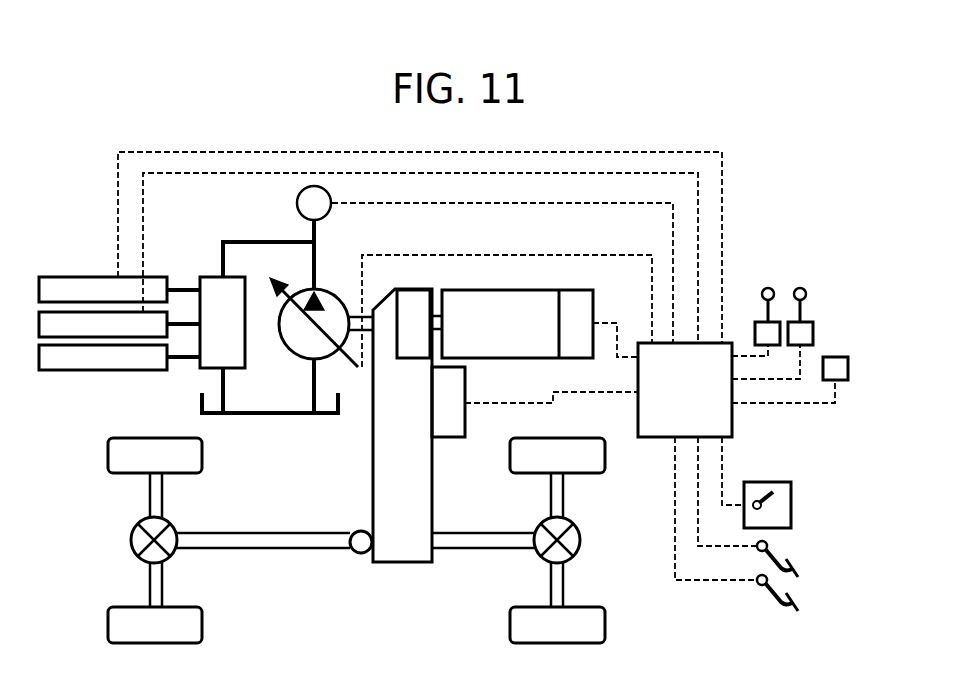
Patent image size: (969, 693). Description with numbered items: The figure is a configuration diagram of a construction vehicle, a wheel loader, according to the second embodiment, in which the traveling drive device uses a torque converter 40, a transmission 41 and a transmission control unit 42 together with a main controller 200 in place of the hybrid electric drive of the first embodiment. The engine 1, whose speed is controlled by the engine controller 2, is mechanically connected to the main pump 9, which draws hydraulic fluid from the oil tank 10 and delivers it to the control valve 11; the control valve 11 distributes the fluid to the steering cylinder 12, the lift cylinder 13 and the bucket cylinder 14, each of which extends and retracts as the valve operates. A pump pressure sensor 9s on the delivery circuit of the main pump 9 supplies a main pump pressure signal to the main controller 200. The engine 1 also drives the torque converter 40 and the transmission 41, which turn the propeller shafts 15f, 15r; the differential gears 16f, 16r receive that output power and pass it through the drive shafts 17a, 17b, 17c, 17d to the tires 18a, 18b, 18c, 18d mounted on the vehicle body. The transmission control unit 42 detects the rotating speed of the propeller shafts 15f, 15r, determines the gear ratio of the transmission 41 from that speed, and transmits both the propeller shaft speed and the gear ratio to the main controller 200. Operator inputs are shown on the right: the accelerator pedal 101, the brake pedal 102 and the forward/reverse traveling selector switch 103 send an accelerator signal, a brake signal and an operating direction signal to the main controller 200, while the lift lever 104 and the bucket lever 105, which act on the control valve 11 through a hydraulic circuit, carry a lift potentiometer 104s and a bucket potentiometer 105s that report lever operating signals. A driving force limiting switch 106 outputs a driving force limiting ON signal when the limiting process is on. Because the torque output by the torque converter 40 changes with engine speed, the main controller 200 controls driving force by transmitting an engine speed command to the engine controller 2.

The engine 1 is at (517, 324).
The engine controller 2 is at (595, 302).
The main pump 9 is at (302, 360).
The pump pressure sensor 9s is at (297, 203).
The oil tank 10 is at (280, 415).
The control valve 11 is at (222, 322).
The steering cylinder 12 is at (103, 290).
The lift cylinder 13 is at (103, 325).
The bucket cylinder 14 is at (103, 358).
The front propeller shaft 15f is at (260, 550).
The rear propeller shaft 15r is at (488, 550).
The front differential gear 16f is at (131, 537).
The rear differential gear 16r is at (581, 537).
The drive shaft 17a is at (147, 583).
The drive shaft 17b is at (147, 500).
The drive shaft 17c is at (565, 583).
The drive shaft 17d is at (565, 500).
The tire 18a is at (155, 625).
The tire 18b is at (155, 455).
The tire 18c is at (557, 625).
The tire 18d is at (557, 455).
The torque converter 40 is at (425, 289).
The transmission 41 is at (402, 425).
The transmission control unit 42 is at (447, 438).
The accelerator pedal 101 is at (800, 562).
The brake pedal 102 is at (797, 597).
The forward/reverse traveling selector switch 103 is at (797, 513).
The lift lever 104 is at (775, 289).
The lift potentiometer 104s is at (755, 322).
The bucket lever 105 is at (807, 289).
The bucket potentiometer 105s is at (812, 322).
The driving force limiting switch 106 is at (835, 357).
The main controller 200 is at (685, 390).